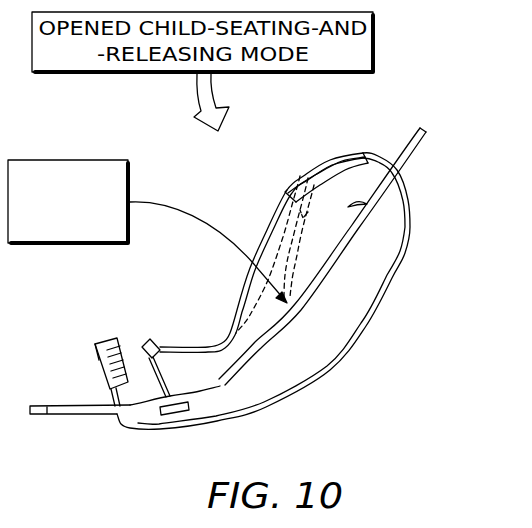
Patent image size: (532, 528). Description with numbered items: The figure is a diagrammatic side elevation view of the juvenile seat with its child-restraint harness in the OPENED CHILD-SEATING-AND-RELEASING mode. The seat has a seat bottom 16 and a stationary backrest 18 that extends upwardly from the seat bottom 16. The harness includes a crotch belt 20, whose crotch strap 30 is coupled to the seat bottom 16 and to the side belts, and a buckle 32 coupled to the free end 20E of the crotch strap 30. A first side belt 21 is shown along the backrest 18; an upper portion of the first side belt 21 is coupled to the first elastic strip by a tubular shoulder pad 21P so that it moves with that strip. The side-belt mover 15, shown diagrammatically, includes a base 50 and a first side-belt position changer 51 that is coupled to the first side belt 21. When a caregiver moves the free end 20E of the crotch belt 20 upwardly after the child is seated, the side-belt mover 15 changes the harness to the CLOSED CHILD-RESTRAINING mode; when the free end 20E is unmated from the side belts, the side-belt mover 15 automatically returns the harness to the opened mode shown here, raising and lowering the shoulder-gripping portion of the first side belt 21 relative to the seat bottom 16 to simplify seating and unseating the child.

The side-belt mover 15 is at (38, 160).
The seat bottom 16 is at (48, 415).
The stationary backrest 18 is at (355, 228).
The crotch belt 20 is at (102, 397).
The free end of crotch belt 20E is at (94, 364).
The first side belt 21 is at (265, 232).
The tubular shoulder pad 21P is at (154, 341).
The crotch strap 30 is at (117, 424).
The buckle 32 is at (115, 341).
The base 50 is at (366, 326).
The first side-belt position changer 51 is at (349, 206).